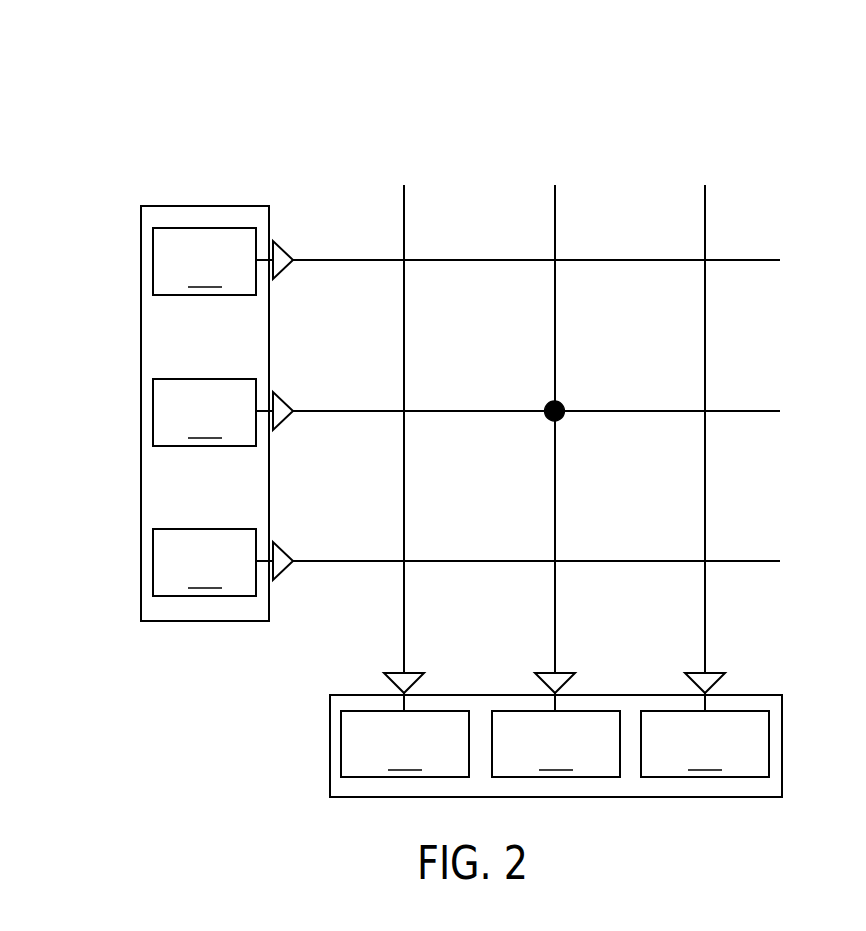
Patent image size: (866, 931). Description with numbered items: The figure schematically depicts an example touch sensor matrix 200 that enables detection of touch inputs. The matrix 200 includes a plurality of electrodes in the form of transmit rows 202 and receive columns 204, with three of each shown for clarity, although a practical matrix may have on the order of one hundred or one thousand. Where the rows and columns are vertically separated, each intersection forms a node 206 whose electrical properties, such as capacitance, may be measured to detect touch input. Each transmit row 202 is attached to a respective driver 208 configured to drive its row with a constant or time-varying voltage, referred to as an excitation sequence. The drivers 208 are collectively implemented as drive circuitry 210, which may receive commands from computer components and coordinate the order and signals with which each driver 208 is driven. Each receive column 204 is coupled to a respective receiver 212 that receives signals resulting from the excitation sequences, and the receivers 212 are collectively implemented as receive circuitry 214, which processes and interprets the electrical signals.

The touch sensor matrix 200 is at (280, 97).
The transmit rows 202 is at (810, 563).
The receive columns 204 is at (706, 158).
The node 206 is at (562, 421).
The driver 208 is at (223, 412).
The drive circuitry 210 is at (188, 206).
The receiver 212 is at (555, 744).
The receive circuitry 214 is at (330, 695).